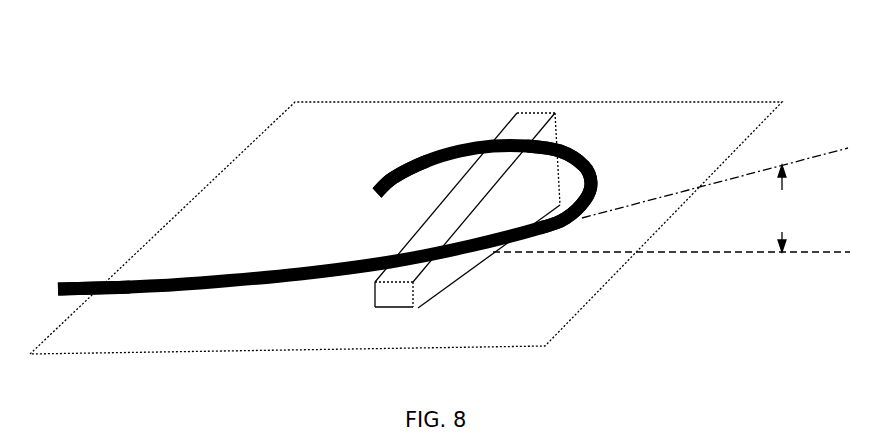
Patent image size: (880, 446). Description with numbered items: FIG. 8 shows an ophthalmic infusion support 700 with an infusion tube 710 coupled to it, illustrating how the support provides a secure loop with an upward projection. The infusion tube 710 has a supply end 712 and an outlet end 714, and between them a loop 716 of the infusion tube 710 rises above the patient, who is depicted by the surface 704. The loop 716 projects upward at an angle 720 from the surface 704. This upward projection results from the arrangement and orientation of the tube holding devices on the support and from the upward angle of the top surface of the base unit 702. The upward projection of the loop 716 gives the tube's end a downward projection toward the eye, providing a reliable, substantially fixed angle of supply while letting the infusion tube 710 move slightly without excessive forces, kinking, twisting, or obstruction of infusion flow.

The ophthalmic infusion support 700 is at (541, 166).
The base unit 702 is at (473, 192).
The surface 704 is at (548, 315).
The infusion tube 710 is at (263, 285).
The supply end 712 is at (77, 283).
The outlet end 714 is at (385, 178).
The loop 716 is at (597, 160).
The angle 720 is at (671, 200).